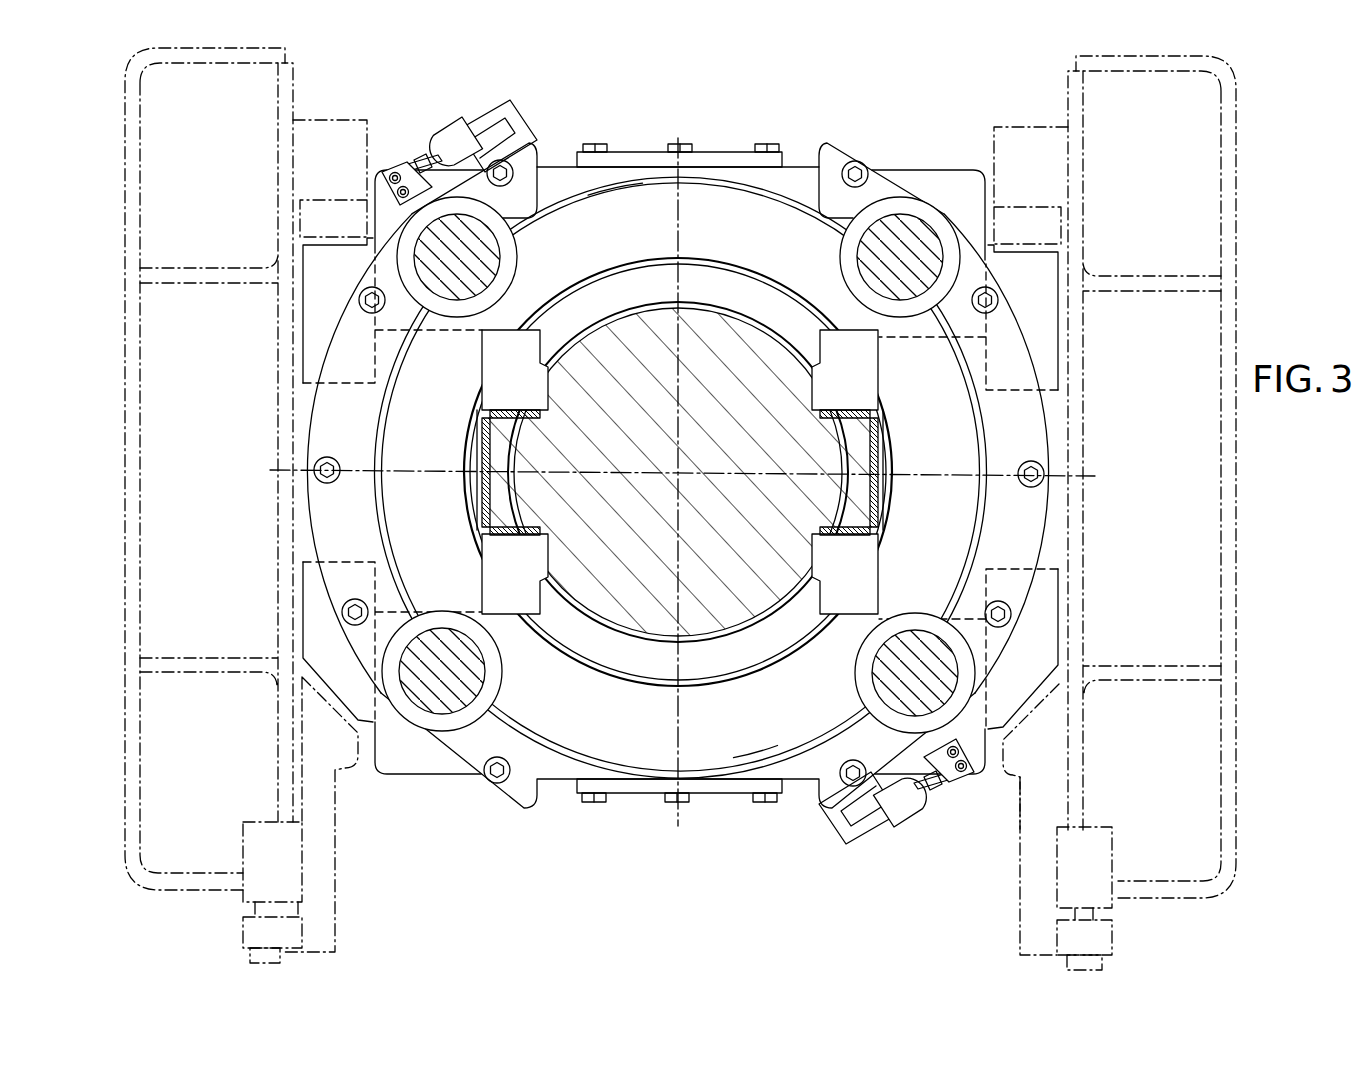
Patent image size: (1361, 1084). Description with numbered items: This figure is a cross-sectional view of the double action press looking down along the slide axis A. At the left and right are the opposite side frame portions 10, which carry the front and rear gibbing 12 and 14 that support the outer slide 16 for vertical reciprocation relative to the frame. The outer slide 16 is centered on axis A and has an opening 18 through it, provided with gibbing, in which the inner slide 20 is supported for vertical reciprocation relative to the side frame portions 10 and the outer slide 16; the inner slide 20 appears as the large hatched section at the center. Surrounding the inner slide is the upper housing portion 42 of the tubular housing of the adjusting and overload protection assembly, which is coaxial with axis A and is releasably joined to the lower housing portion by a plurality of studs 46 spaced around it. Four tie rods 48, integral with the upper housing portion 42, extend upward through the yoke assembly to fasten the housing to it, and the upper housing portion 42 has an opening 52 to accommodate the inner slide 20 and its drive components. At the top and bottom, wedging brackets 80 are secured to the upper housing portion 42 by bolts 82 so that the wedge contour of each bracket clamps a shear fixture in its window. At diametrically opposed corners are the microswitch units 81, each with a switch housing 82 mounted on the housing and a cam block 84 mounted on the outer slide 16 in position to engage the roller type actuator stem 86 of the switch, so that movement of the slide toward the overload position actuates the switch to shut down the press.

The side frame portions 10 is at (112, 464).
The front gibbing 12 is at (354, 784).
The rear gibbing 14 is at (376, 132).
The outer slide 16 is at (426, 762).
The opening 18 is at (600, 320).
The inner slide 20 is at (742, 332).
The upper housing portion 42 is at (968, 437).
The studs 46 is at (512, 184).
The tie rods 48 is at (455, 300).
The opening 52 is at (612, 272).
The wedging bracket 80 is at (655, 155).
The microswitch unit 81 is at (522, 100).
The bolts 82 is at (478, 125).
The cam block 84 is at (416, 163).
The roller type actuator stem 86 is at (396, 172).
The axis A is at (682, 474).